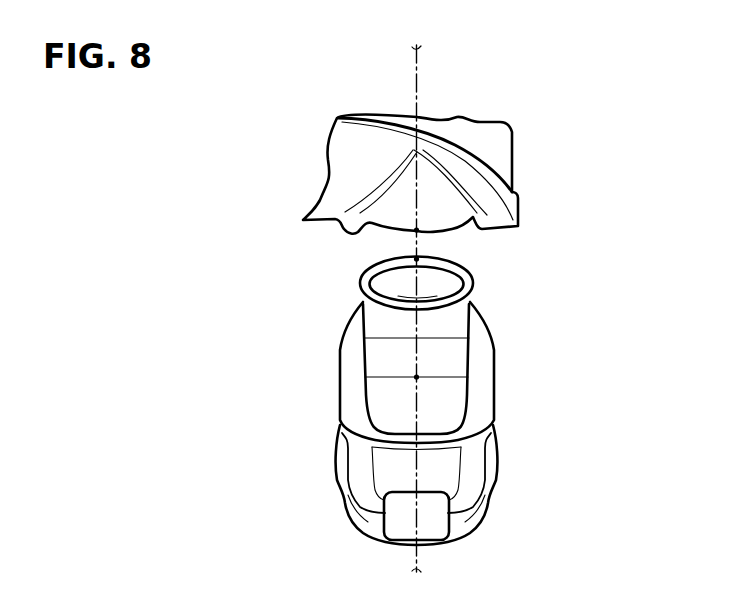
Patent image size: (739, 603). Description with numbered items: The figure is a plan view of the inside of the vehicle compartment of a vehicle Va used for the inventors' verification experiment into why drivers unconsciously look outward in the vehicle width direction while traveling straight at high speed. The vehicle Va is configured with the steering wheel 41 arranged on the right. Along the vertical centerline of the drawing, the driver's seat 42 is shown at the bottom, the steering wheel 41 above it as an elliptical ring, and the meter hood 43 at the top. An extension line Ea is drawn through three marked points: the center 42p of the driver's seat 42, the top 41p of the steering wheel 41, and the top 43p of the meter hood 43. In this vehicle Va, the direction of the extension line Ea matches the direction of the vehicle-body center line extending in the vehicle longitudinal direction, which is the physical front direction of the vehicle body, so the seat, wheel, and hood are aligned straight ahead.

The extension line Ea is at (415, 77).
The vehicle Va is at (536, 63).
The meter hood 43 is at (440, 192).
The top of meter hood 43p is at (418, 230).
The steering wheel 41 is at (472, 282).
The top of steering wheel 41p is at (415, 260).
The driver's seat 42 is at (484, 411).
The center of driver's seat 42p is at (417, 377).